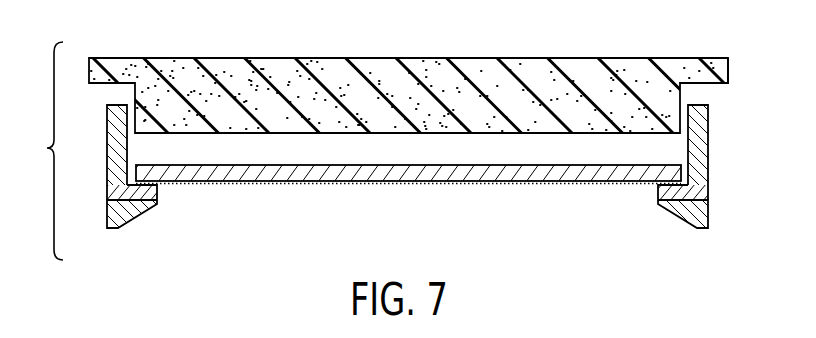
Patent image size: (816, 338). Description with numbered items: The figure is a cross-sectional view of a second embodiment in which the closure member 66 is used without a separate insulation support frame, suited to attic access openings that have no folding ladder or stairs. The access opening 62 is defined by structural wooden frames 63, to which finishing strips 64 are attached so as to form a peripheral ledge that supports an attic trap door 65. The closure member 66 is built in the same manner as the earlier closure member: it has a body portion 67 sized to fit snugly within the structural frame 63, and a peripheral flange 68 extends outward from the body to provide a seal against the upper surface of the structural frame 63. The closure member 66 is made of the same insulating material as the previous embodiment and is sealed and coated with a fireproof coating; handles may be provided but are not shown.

The access opening 62 is at (357, 163).
The structural wooden frame 63 is at (123, 162).
The finishing strip 64 is at (142, 208).
The attic trap door 65 is at (497, 181).
The closure member 66 is at (452, 60).
The body portion 67 is at (443, 110).
The peripheral flange 68 is at (685, 66).